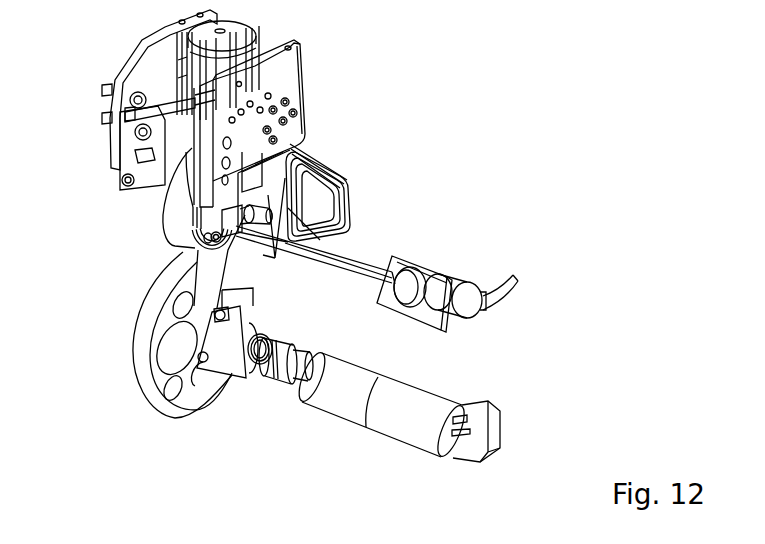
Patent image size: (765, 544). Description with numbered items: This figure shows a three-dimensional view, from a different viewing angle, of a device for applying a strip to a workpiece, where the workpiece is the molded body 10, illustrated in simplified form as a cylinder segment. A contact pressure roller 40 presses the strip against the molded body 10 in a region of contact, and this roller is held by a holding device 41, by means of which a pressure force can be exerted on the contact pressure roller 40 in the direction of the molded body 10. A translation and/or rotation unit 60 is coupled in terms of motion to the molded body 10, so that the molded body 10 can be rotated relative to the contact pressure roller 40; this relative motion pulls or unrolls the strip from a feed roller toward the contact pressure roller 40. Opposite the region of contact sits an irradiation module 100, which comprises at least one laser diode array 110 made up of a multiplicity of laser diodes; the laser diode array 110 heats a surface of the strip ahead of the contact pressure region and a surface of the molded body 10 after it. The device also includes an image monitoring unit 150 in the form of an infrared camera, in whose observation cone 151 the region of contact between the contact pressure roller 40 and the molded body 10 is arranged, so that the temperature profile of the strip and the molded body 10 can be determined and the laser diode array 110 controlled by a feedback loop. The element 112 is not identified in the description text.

The molded body 10 is at (143, 347).
The contact pressure roller 40 is at (178, 219).
The holding device 41 is at (143, 140).
The translation and/or rotation unit 60 is at (407, 422).
The irradiation module 100 is at (320, 193).
The laser diode array 110 is at (320, 193).
The pin 112 is at (333, 241).
The image monitoring unit 150 is at (430, 273).
The observation cone 151 is at (330, 278).